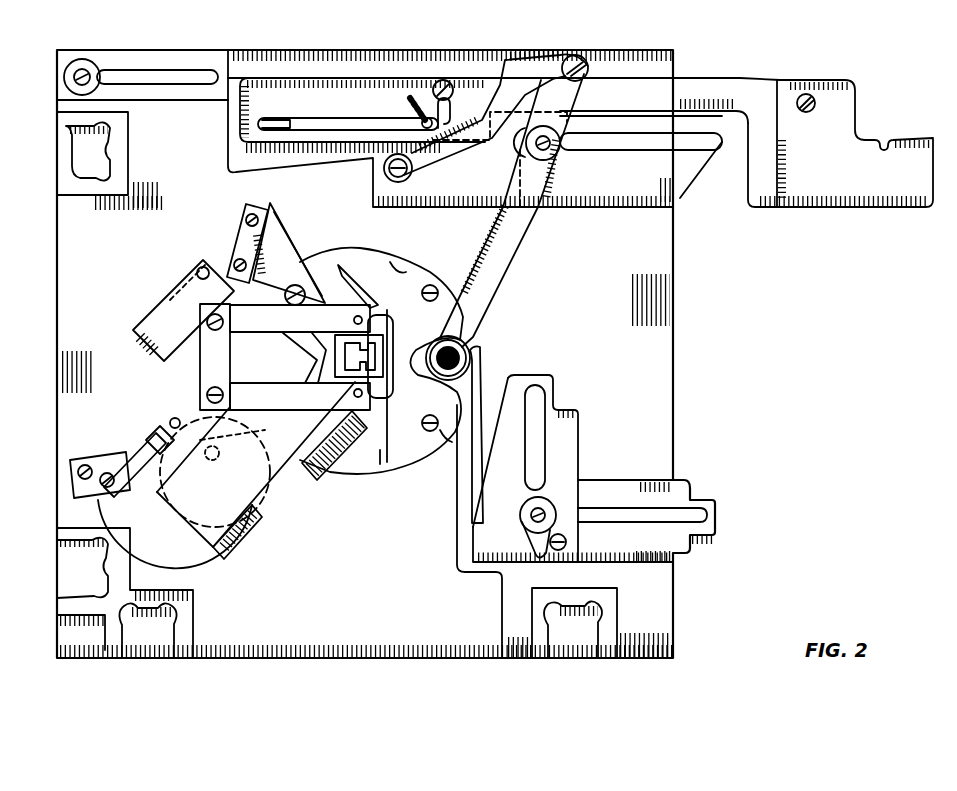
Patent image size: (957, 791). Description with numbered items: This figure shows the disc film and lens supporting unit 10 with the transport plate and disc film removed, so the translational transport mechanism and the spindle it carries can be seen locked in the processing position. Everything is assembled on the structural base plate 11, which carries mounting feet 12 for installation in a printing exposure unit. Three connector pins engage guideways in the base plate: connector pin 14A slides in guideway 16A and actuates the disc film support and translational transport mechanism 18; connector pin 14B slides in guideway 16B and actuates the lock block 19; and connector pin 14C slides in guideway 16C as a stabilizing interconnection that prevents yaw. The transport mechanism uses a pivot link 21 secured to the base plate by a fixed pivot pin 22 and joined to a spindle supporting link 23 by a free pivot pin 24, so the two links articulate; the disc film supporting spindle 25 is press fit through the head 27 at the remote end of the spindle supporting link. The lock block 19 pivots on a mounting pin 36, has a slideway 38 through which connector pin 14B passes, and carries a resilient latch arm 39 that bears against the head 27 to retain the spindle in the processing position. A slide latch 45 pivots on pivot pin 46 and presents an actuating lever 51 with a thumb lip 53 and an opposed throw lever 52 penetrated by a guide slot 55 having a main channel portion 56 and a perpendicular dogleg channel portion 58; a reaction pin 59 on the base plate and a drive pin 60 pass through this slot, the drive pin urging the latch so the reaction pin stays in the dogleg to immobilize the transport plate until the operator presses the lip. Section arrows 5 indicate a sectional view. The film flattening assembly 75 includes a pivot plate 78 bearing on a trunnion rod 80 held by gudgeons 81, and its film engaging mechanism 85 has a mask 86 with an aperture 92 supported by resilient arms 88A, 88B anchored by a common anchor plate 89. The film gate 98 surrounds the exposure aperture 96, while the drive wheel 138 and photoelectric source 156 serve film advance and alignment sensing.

The section line indicator 5 is at (268, 196).
The disc film and lens supporting unit 10 is at (745, 42).
The structural base plate 11 is at (673, 346).
The mounting feet 12 is at (70, 185).
The connector pin 14A is at (548, 150).
The connector pin 14B is at (556, 513).
The connector pin 14C is at (86, 66).
The guideway 16A is at (697, 152).
The guideway 16B is at (700, 508).
The guideway 16C is at (186, 73).
The disc film support and translational transport mechanism 18 is at (530, 230).
The lock block 19 is at (574, 446).
The pivot link 21 is at (510, 70).
The pivot pin 22 is at (413, 171).
The spindle supporting link 23 is at (480, 252).
The pivot pin 24 is at (581, 56).
The disc film supporting spindle 25 is at (464, 350).
The head 27 is at (486, 372).
The mounting pin 36 is at (568, 542).
The slideway 38 is at (528, 420).
The latch arm 39 is at (496, 392).
The slide latch 45 is at (698, 78).
The pivot pin 46 is at (808, 94).
The actuating lever 51 is at (855, 106).
The throw lever 52 is at (604, 86).
The lip 53 is at (913, 135).
The guide slot 55 is at (333, 120).
The main channel portion 56 is at (290, 122).
The dogleg channel portion 58 is at (458, 118).
The reaction pin 59 is at (436, 85).
The drive pin 60 is at (421, 120).
The film flattening assembly 75 is at (128, 307).
The pivot plate 78 is at (166, 300).
The trunnion rod 80 is at (300, 481).
The gudgeons 81 is at (326, 486).
The film engaging mechanism 85 is at (418, 300).
The mask 86 is at (378, 412).
The resilient arm 88A is at (288, 340).
The resilient arm 88B is at (246, 392).
The anchor plate 89 is at (196, 381).
The aperture 92 is at (372, 378).
The exposure aperture 96 is at (256, 464).
The film gate 98 is at (374, 455).
The drive wheel 138 is at (236, 520).
The photoelectric source 156 is at (152, 440).